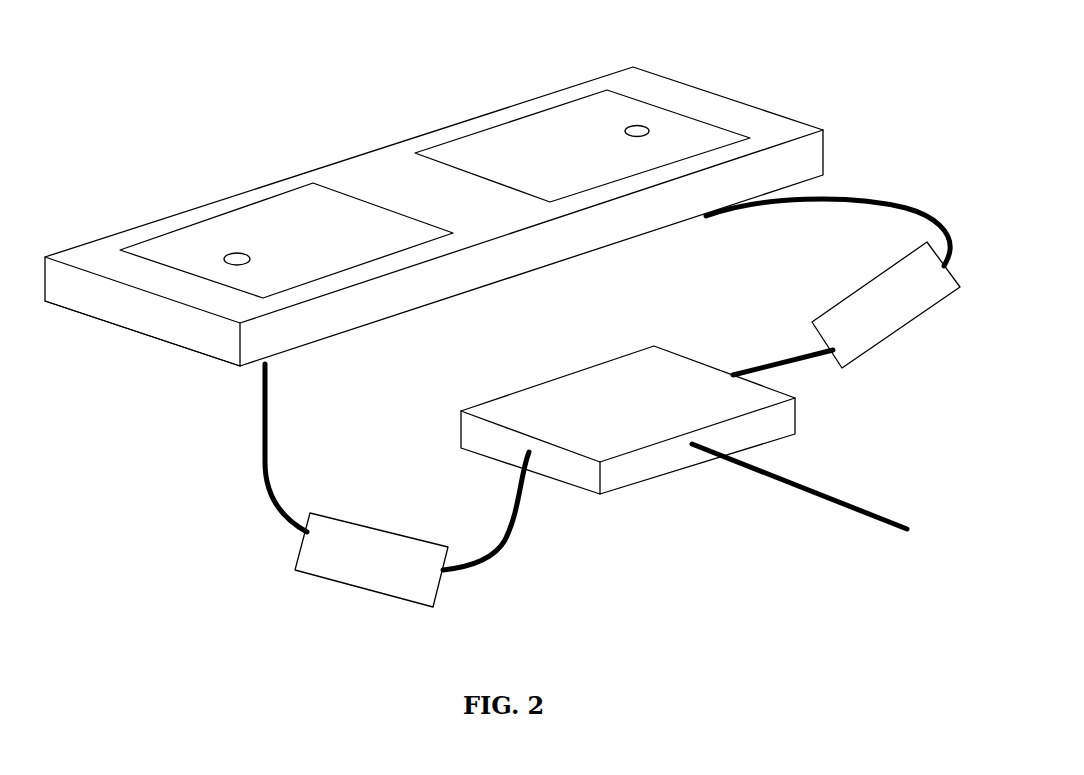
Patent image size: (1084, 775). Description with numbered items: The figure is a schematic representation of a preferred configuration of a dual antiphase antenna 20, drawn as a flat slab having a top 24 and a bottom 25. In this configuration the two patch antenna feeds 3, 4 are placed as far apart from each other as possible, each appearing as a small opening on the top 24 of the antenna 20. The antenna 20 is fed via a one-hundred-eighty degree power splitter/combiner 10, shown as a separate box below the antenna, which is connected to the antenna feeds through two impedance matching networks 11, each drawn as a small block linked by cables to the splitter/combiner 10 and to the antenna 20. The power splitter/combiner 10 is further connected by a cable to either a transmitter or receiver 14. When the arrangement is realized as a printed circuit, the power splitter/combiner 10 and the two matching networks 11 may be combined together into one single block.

The dual antiphase antenna 20 is at (390, 133).
The top 24 is at (750, 124).
The patch antenna feed 3 is at (648, 126).
The patch antenna feed 4 is at (228, 254).
The bottom 25 is at (212, 362).
The 180 degrees power splitter/combiner 10 is at (723, 405).
The matching network 11 is at (370, 570).
The transmitter or receiver 14 is at (827, 503).